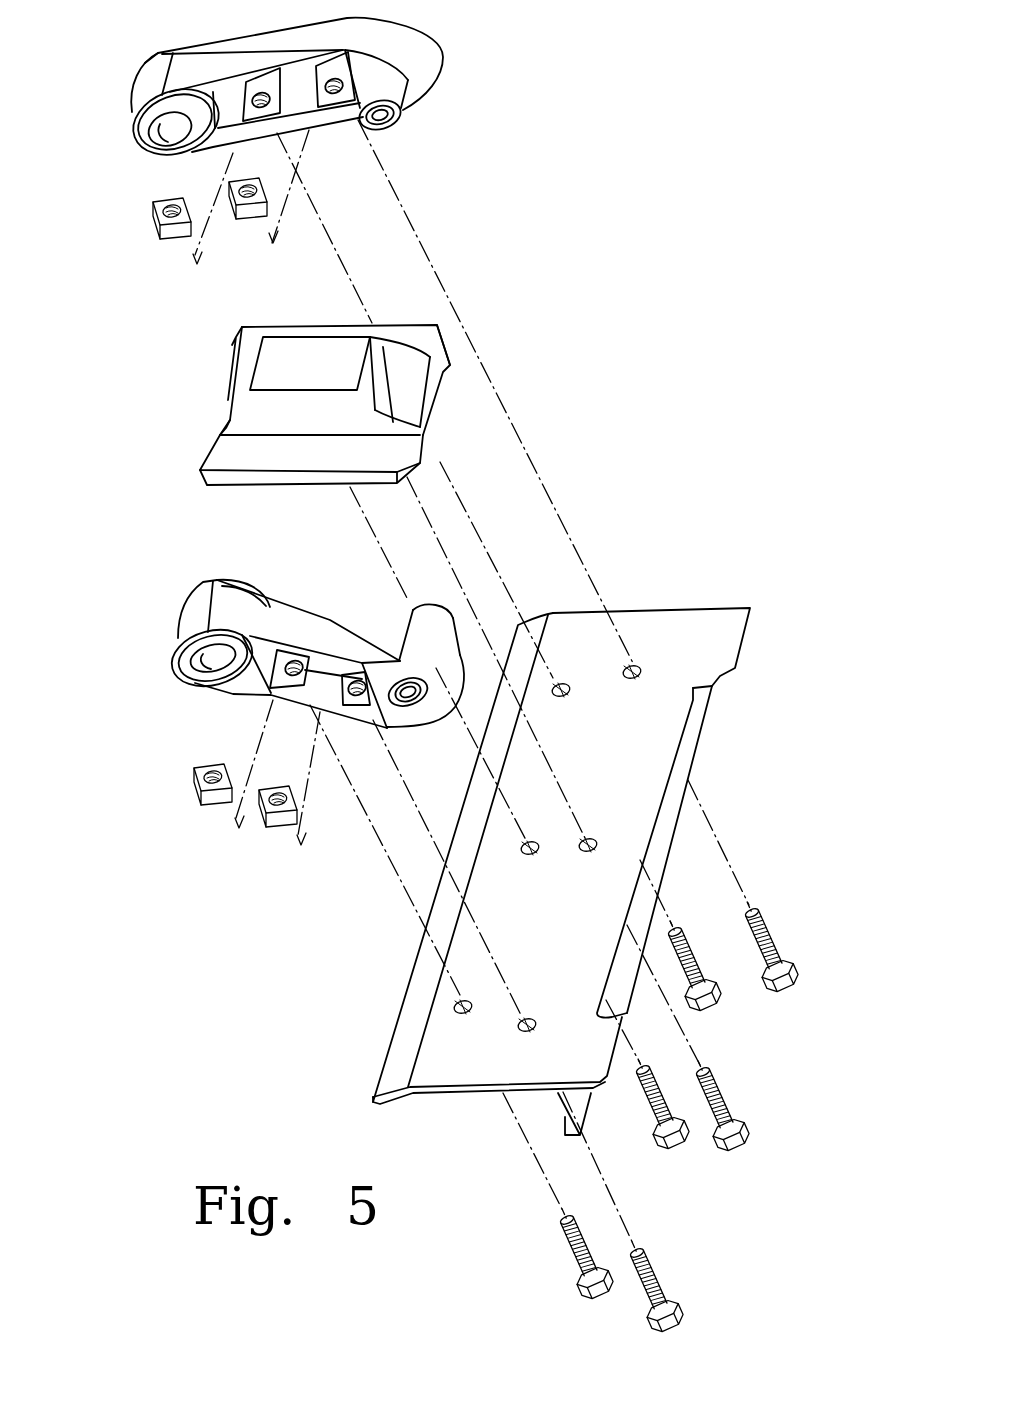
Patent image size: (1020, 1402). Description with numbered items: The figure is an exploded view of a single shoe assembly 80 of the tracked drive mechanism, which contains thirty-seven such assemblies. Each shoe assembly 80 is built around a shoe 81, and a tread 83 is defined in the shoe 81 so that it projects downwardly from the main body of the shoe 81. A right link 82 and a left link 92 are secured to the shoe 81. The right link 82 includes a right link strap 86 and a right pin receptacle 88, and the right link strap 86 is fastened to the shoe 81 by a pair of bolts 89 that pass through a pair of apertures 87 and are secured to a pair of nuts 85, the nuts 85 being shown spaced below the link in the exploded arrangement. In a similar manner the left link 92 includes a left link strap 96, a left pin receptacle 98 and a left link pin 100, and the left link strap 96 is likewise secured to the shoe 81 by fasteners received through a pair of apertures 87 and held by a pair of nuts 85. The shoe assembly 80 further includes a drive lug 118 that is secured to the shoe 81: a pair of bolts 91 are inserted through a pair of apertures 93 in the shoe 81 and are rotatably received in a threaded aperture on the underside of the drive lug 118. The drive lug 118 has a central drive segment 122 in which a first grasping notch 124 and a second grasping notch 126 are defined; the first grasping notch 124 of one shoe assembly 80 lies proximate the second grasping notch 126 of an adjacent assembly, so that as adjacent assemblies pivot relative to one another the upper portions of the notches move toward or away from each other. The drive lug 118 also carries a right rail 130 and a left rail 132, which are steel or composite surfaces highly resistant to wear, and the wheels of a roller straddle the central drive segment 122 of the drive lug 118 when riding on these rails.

The shoe assembly 80 is at (652, 230).
The shoe 81 is at (561, 848).
The right link 82 is at (293, 648).
The tread 83 is at (548, 1117).
The nuts 85 is at (170, 240).
The right link strap 86 is at (290, 622).
The apertures 87 is at (570, 697).
The right pin receptacle 88 is at (205, 685).
The bolts 89 is at (785, 975).
The bolts 91 is at (735, 1097).
The left link 92 is at (293, 96).
The apertures 93 is at (597, 838).
The left link strap 96 is at (248, 48).
The left pin receptacle 98 is at (150, 143).
The left link pin 100 is at (405, 103).
The drive lug 118 is at (364, 394).
The central drive segment 122 is at (280, 362).
The first grasping notch 124 is at (230, 405).
The second grasping notch 126 is at (405, 400).
The right rail 130 is at (395, 452).
The left rail 132 is at (445, 327).